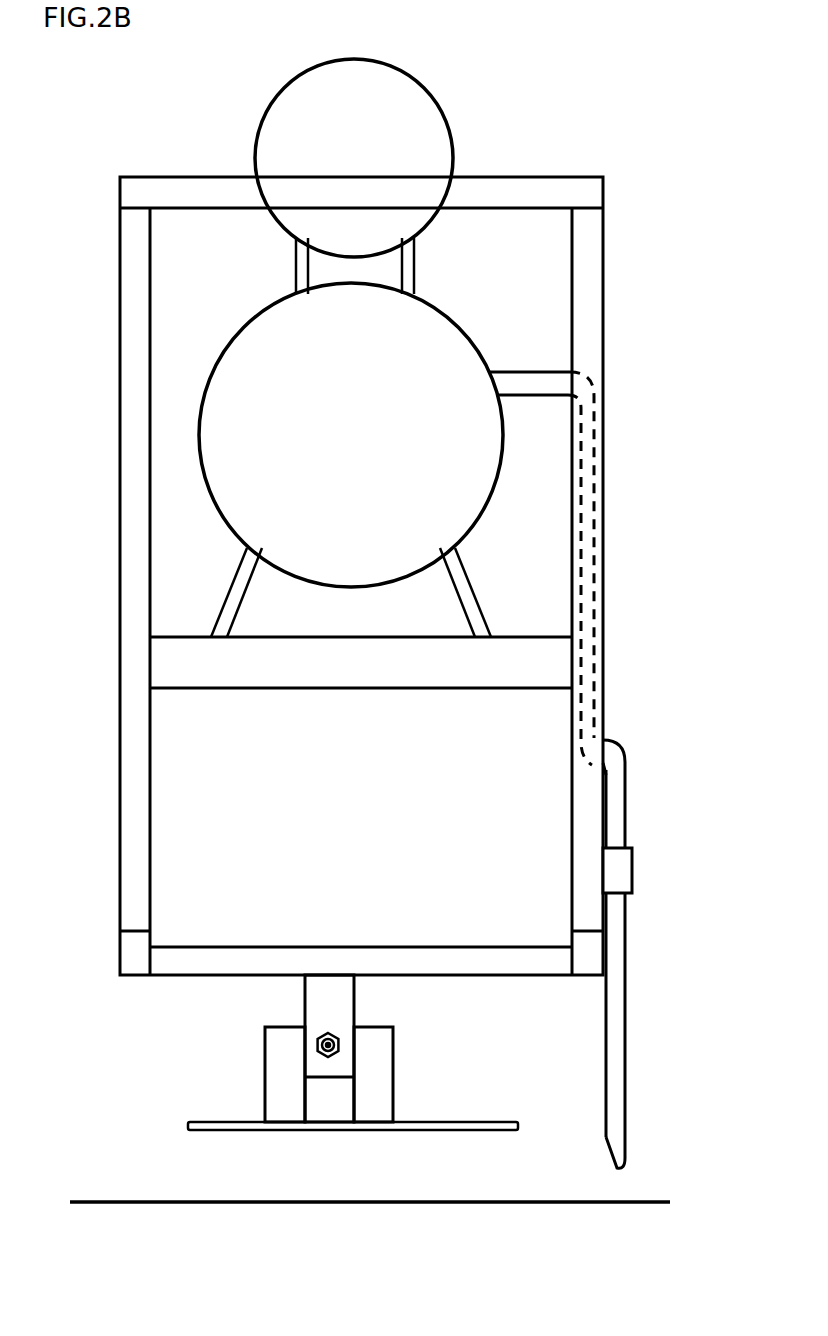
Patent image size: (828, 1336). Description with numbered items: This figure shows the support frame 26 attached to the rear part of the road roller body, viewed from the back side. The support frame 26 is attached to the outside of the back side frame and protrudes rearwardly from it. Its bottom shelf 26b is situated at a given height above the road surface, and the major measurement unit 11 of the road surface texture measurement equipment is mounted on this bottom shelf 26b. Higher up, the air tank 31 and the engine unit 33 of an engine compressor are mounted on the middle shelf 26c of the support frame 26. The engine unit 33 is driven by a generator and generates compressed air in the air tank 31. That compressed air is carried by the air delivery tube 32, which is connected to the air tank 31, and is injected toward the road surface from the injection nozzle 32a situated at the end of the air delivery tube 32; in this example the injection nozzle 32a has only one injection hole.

The major measurement unit 11 is at (373, 1067).
The support frame 26 is at (604, 330).
The bottom shelf 26b is at (330, 1129).
The middle shelf 26c is at (190, 634).
The air tank 31 is at (367, 448).
The air delivery tube 32 is at (627, 921).
The injection nozzle 32a is at (612, 1141).
The engine unit 33 is at (367, 173).